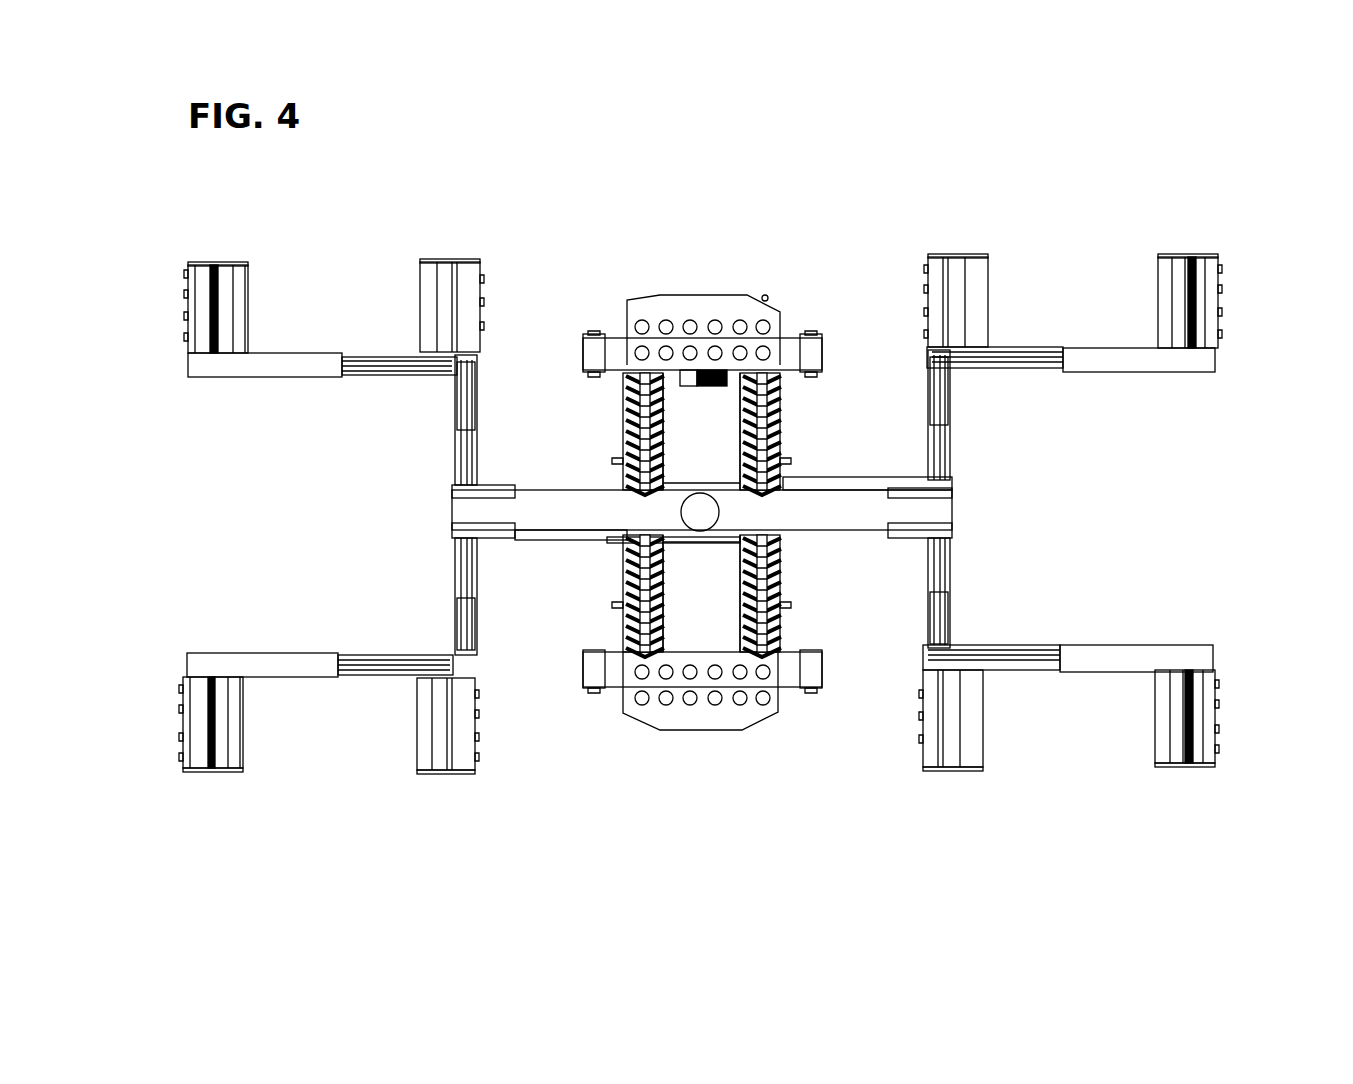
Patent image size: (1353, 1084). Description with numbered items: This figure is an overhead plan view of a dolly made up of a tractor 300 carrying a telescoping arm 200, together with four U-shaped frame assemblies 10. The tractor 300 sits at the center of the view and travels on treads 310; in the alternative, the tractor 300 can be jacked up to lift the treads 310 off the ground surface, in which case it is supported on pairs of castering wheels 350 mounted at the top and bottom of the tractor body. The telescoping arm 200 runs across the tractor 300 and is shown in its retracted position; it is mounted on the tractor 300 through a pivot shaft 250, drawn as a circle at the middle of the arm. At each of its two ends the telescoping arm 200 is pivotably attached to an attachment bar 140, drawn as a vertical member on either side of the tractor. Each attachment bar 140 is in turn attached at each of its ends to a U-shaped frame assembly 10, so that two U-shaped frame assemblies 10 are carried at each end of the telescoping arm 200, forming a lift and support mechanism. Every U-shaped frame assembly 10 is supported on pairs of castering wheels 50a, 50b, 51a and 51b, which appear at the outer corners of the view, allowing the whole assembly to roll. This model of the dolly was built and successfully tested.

The U-shaped frame assembly 10 is at (328, 247).
The castering wheel 50a is at (185, 324).
The castering wheel 50b is at (484, 324).
The castering wheel 51a is at (180, 738).
The castering wheel 51b is at (480, 738).
The attachment bar 140 is at (485, 421).
The telescoping arm 200 is at (567, 482).
The pivot shaft 250 is at (710, 532).
The tractor 300 is at (700, 744).
The treads 310 is at (782, 433).
The castering wheels 350 is at (600, 336).